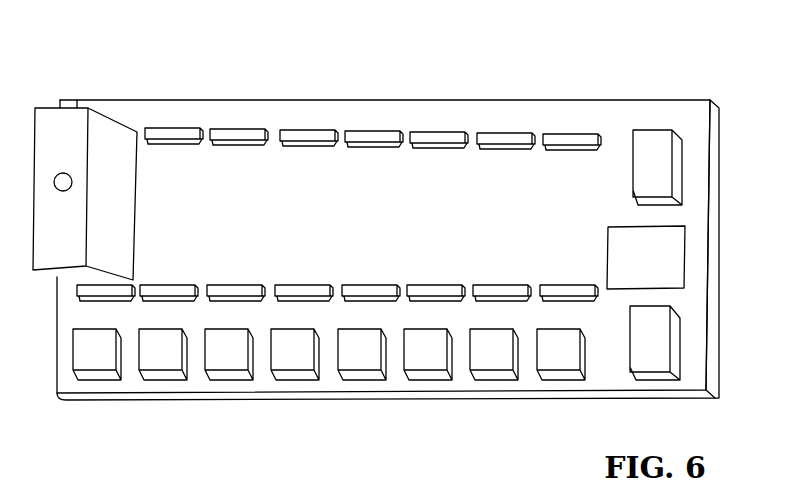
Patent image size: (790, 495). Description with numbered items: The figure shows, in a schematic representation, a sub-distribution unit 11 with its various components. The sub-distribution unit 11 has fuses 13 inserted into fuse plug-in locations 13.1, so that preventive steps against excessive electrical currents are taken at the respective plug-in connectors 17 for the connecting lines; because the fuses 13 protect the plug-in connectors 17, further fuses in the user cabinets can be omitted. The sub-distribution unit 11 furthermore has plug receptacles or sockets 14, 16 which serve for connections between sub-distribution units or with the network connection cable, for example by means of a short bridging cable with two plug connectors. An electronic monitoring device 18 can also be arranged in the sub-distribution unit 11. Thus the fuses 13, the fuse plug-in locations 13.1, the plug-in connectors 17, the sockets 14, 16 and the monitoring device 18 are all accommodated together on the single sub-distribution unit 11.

The sub-distribution unit 11 is at (448, 97).
The fuse 13 is at (72, 112).
The fuse plug-in location 13.1 is at (180, 133).
The plug receptacle or socket 14 is at (680, 350).
The plug receptacle or socket 16 is at (658, 150).
The plug-in connector 17 is at (98, 373).
The electronic monitoring device 18 is at (653, 262).